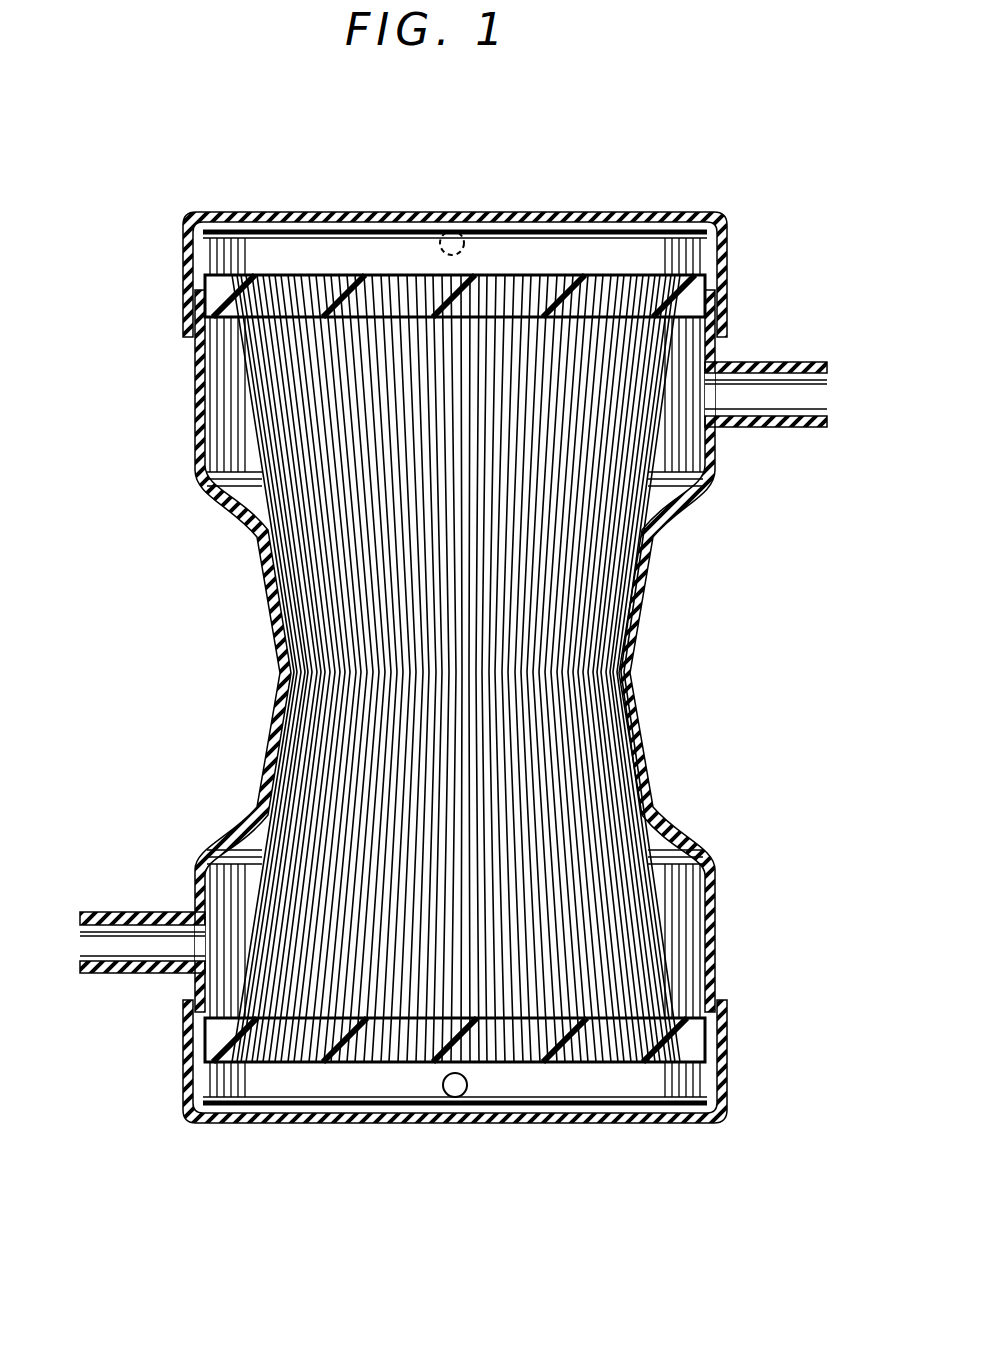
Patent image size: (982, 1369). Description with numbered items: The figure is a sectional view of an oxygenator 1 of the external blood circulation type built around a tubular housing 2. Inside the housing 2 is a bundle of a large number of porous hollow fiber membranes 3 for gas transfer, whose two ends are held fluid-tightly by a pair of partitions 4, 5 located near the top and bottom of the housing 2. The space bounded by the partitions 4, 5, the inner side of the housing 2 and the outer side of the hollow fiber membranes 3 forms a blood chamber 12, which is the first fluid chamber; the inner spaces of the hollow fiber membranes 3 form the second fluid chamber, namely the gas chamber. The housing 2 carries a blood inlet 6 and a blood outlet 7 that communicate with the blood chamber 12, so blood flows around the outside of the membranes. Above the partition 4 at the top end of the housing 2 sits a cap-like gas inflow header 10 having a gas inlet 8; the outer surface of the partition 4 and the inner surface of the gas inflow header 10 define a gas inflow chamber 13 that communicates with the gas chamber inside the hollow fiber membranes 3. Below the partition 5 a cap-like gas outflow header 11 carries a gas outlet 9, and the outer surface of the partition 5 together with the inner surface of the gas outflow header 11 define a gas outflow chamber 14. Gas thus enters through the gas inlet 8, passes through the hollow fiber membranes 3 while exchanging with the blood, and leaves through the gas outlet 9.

The oxygenator 1 is at (236, 590).
The housing 2 is at (663, 520).
The hollow fiber membrane 3 is at (563, 593).
The partition 4 is at (215, 300).
The partition 5 is at (665, 1047).
The blood inlet 6 is at (155, 950).
The blood outlet 7 is at (800, 385).
The gas inlet 8 is at (451, 230).
The gas outlet 9 is at (450, 1105).
The gas inflow header 10 is at (596, 207).
The gas outflow header 11 is at (328, 1120).
The blood chamber 12 is at (222, 428).
The gas inflow chamber 13 is at (258, 250).
The gas outflow chamber 14 is at (605, 1085).